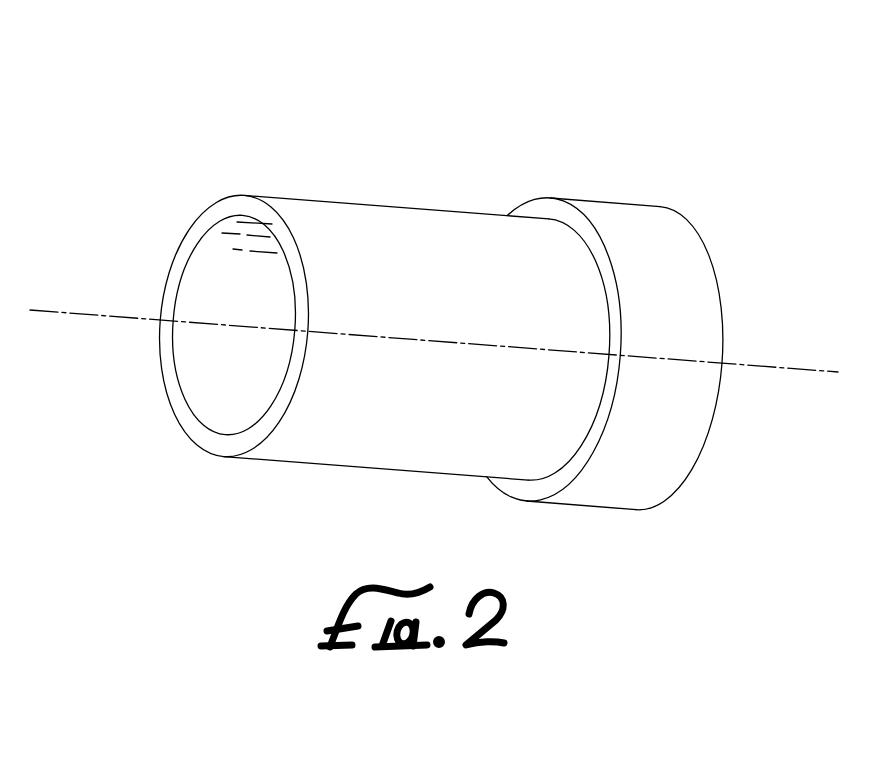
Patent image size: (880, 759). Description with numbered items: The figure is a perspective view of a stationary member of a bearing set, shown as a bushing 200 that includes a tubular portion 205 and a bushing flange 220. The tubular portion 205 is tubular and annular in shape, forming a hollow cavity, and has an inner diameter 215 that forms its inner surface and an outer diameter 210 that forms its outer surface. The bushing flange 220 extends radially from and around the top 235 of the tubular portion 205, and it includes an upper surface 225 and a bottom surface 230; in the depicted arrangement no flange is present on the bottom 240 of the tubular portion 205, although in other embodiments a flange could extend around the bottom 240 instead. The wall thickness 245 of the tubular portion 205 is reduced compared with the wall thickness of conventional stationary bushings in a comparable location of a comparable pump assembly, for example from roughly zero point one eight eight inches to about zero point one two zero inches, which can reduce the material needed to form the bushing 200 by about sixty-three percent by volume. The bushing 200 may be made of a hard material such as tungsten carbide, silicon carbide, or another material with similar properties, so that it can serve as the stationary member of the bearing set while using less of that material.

The bushing 200 is at (237, 112).
The tubular portion 205 is at (435, 210).
The outer diameter 210 is at (402, 437).
The inner diameter 215 is at (253, 405).
The bushing flange 220 is at (652, 228).
The upper surface 225 is at (703, 249).
The bottom surface 230 is at (539, 208).
The top 235 is at (625, 388).
The bottom 240 is at (152, 340).
The thickness 245 is at (223, 268).